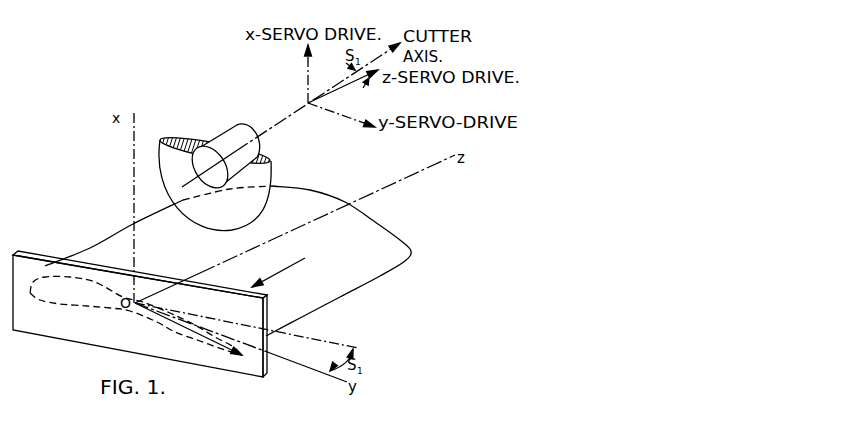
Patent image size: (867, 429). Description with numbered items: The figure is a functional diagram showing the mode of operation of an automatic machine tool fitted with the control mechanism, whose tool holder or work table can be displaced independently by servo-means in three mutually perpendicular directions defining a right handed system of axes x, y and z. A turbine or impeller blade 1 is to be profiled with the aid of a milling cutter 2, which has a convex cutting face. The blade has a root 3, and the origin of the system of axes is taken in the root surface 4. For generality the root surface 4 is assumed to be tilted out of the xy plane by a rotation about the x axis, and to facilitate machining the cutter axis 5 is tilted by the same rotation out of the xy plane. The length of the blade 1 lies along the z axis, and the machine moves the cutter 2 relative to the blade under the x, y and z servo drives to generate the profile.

The turbine or impeller blade 1 is at (228, 261).
The milling cutter 2 is at (216, 177).
The root 3 is at (112, 338).
The root surface 4 is at (284, 265).
The cutter axis 5 is at (288, 114).